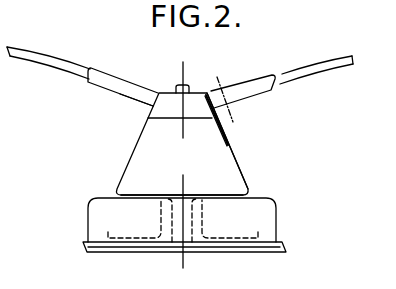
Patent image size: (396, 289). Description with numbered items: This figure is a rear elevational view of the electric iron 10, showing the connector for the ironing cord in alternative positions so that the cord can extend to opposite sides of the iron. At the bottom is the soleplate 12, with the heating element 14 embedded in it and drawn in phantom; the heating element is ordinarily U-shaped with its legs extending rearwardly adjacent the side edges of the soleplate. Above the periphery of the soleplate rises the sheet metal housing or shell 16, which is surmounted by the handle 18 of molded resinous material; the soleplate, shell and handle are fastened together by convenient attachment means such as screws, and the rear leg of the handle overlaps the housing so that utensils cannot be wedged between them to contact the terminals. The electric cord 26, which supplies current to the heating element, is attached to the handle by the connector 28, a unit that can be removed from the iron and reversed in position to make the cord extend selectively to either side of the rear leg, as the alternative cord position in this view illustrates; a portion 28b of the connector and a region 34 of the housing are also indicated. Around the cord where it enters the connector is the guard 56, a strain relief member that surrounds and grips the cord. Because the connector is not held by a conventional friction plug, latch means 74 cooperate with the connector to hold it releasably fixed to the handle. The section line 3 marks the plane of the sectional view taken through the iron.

The electric iron 10 is at (131, 141).
The soleplate 12 is at (86, 251).
The heating element 14 is at (140, 251).
The sheet metal housing or shell 16 is at (89, 212).
The handle 18 is at (238, 161).
The electric cord 26 is at (57, 54).
The connector 28 is at (165, 101).
The coupling sleeve portion 28b is at (155, 109).
The wall section 34 is at (231, 143).
The guard 56 is at (259, 79).
The latch means 74 is at (176, 86).
The section line 3- 3 is at (209, 72).